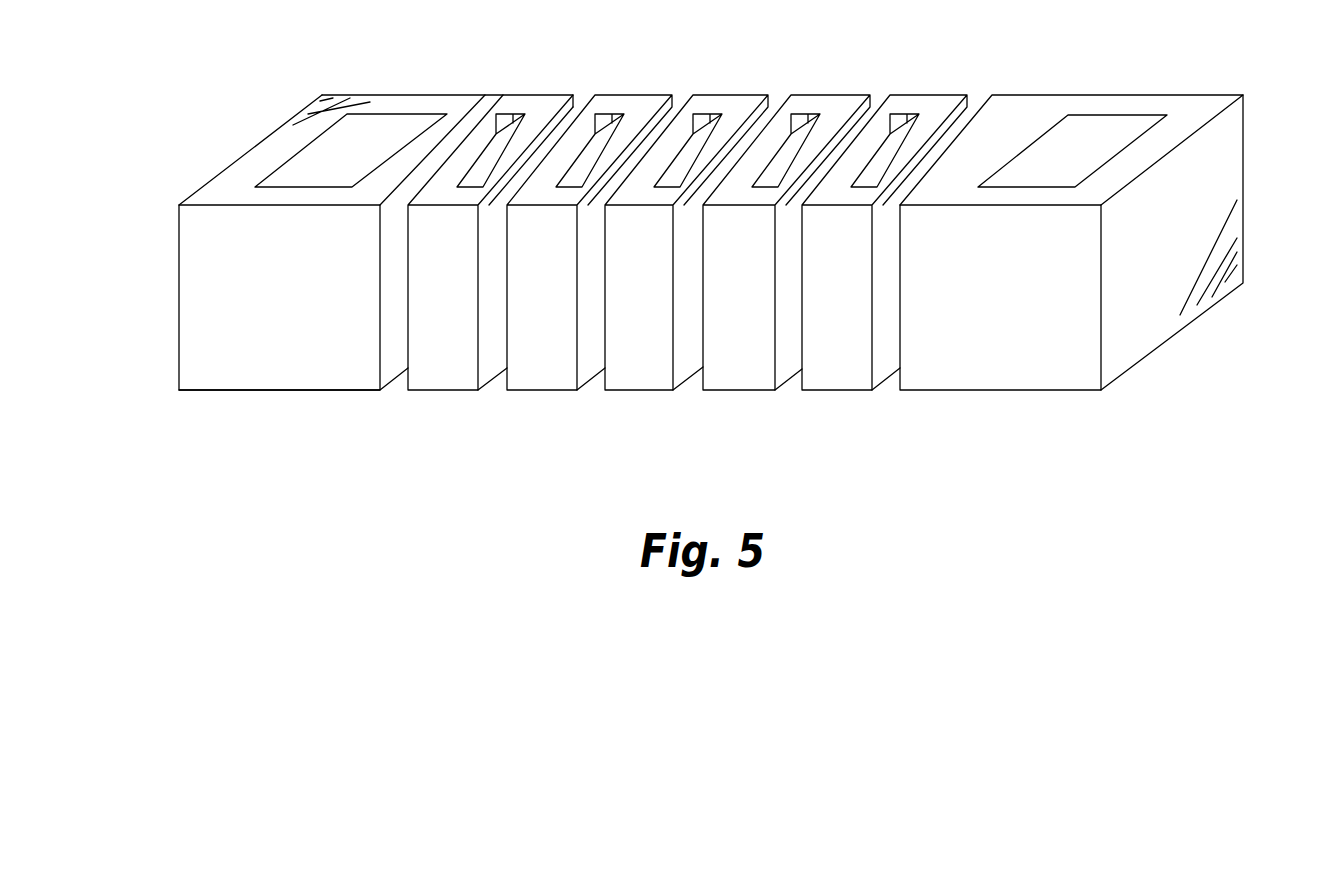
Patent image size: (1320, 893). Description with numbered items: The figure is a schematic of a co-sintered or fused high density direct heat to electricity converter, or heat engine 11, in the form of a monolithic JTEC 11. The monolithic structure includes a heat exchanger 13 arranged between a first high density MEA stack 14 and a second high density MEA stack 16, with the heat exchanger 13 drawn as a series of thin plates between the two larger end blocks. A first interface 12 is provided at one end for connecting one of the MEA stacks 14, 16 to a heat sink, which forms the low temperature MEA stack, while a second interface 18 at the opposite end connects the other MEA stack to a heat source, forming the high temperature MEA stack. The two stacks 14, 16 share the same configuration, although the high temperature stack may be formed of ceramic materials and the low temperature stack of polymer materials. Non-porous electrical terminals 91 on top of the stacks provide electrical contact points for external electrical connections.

The heat engine 11 is at (432, 434).
The first interface 12 is at (178, 271).
The heat exchanger 13 is at (641, 391).
The first high density MEA stack 14 is at (1037, 391).
The second high density MEA stack 16 is at (216, 390).
The second interface 18 is at (1220, 164).
The non-porous electrical terminal 91 is at (382, 140).